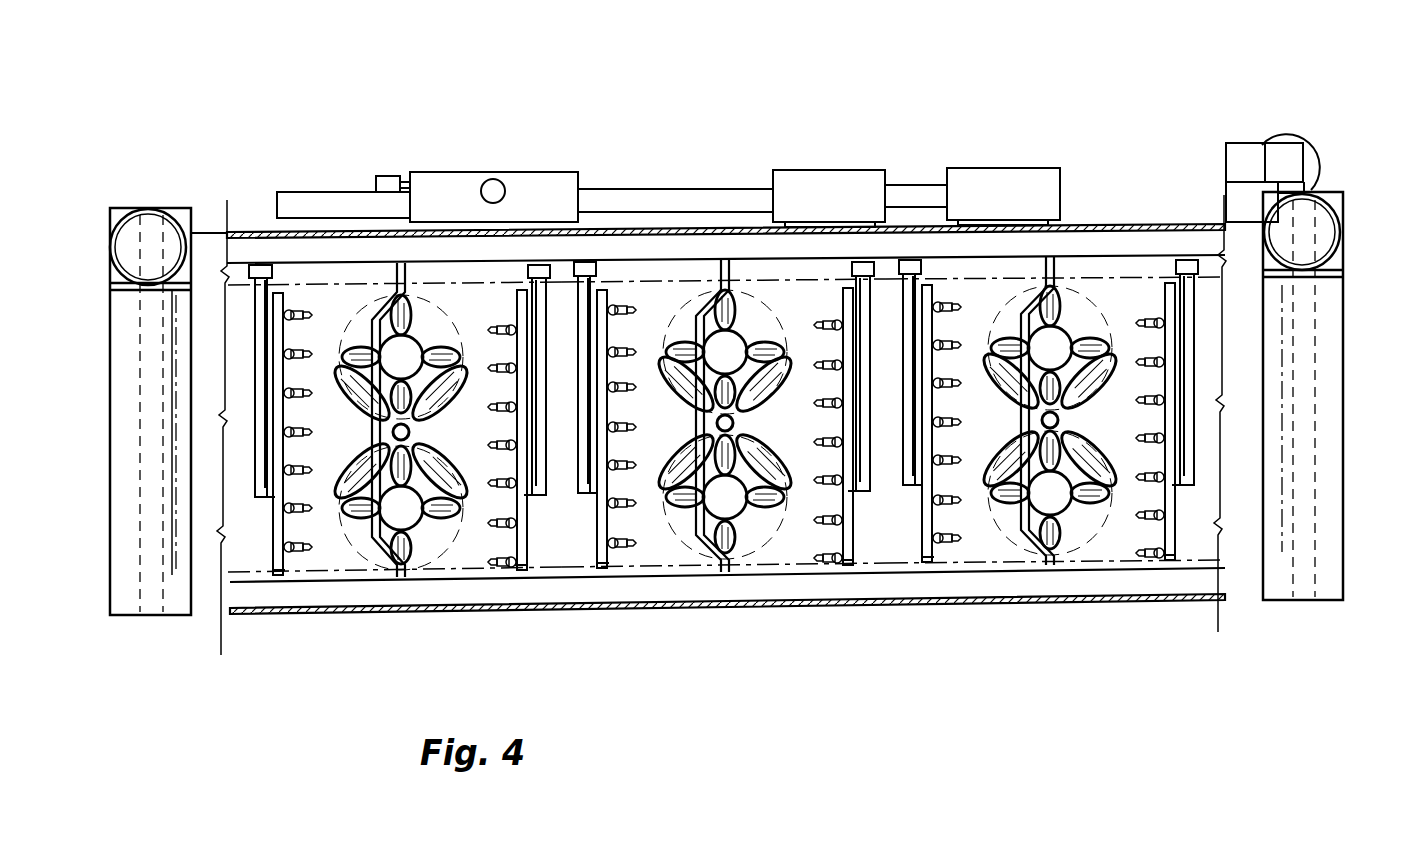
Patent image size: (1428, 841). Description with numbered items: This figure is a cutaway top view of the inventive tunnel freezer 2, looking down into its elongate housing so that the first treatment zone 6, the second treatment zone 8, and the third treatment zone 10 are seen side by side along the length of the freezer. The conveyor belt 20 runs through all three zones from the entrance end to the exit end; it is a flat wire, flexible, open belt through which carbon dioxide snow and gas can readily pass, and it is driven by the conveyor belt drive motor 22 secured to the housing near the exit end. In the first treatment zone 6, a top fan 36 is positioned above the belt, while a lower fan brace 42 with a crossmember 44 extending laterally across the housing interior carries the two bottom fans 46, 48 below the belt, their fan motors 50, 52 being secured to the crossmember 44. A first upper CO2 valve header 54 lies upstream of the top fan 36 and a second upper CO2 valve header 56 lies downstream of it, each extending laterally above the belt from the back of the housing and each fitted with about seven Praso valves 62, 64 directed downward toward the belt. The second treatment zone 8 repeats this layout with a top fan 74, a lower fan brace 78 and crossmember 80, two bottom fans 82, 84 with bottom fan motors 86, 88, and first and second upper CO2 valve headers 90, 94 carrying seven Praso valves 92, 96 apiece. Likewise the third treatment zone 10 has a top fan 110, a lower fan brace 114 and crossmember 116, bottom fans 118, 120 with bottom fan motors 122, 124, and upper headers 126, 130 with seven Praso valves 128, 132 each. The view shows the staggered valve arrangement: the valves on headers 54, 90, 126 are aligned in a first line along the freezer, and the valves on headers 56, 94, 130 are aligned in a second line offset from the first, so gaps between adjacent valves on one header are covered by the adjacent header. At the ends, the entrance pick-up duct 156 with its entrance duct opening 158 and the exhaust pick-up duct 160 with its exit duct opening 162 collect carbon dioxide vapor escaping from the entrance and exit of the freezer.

The tunnel freezer 2 is at (713, 136).
The first treatment zone 6 is at (335, 305).
The second treatment zone 8 is at (667, 298).
The third treatment zone 10 is at (995, 298).
The conveyor belt 20 is at (485, 562).
The conveyor belt drive motor 22 is at (1284, 140).
The top fan 36 is at (370, 505).
The lower fan brace 42 is at (390, 578).
The crossmember 44 is at (388, 420).
The bottom fan 46 is at (420, 550).
The bottom fan 48 is at (417, 305).
The fan motor 50 is at (418, 512).
The fan motor 52 is at (410, 358).
The first upper CO2 valve header 54 is at (278, 530).
The second upper CO2 valve header 56 is at (535, 548).
The Praso valves 62 is at (305, 467).
The Praso valves 64 is at (495, 480).
The top fan 74 is at (762, 538).
The lower fan brace 78 is at (710, 553).
The lower fan brace crossmember 80 is at (712, 415).
The bottom fan 82 is at (740, 533).
The bottom fan 84 is at (740, 305).
The bottom fan motor 86 is at (717, 498).
The bottom fan motor 88 is at (735, 352).
The first upper CO2 valve header 90 is at (590, 552).
The Praso valves 92 is at (628, 462).
The second upper CO2 valve header 94 is at (858, 550).
The Praso valves 96 is at (822, 478).
The top fan 110 is at (1076, 508).
The lower fan brace 114 is at (1035, 555).
The lower fan brace crossmember 116 is at (1037, 411).
The bottom fan 118 is at (1075, 542).
The bottom fan 120 is at (1052, 348).
The bottom fan motor 122 is at (1048, 495).
The bottom fan motor 124 is at (1050, 345).
The first upper CO2 valve header 126 is at (912, 560).
The Praso valves 128 is at (953, 498).
The second upper CO2 valve header 130 is at (1183, 538).
The Praso valves 132 is at (1148, 472).
The entrance pick-up duct 156 is at (132, 233).
The entrance duct opening 158 is at (137, 473).
The exhaust pick-up duct 160 is at (1302, 232).
The exit duct opening 162 is at (1305, 587).